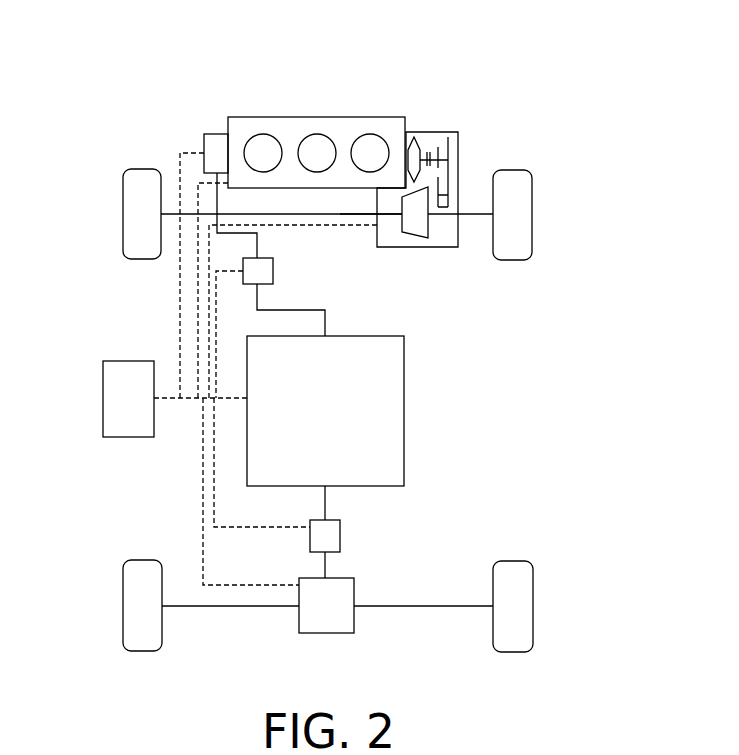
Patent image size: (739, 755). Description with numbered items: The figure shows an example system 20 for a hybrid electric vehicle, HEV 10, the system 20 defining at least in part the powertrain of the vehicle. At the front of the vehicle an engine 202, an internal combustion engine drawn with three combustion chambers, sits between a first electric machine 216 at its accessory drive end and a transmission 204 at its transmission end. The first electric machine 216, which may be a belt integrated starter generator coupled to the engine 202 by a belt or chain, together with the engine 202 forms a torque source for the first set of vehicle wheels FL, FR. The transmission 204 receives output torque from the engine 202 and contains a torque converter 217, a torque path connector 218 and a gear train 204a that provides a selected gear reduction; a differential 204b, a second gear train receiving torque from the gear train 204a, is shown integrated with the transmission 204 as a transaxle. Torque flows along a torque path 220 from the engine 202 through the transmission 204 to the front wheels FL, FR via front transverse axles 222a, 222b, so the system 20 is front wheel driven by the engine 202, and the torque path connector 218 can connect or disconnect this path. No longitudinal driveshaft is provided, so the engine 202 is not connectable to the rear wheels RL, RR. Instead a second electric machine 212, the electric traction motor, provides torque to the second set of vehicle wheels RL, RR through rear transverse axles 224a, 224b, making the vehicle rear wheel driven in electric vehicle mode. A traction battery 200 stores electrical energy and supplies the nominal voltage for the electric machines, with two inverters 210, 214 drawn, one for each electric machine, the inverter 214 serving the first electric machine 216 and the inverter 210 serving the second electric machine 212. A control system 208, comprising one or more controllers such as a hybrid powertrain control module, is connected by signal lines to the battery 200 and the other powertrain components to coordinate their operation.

The HEV 10 is at (548, 68).
The system 20 is at (530, 131).
The traction battery 200 is at (404, 415).
The engine 202 is at (313, 117).
The transmission 204 is at (460, 132).
The gear train 204a is at (449, 150).
The differential 204b is at (412, 238).
The control system 208 is at (103, 398).
The inverter 210 is at (340, 536).
The second electric machine 212 is at (322, 634).
The inverter 214 is at (273, 270).
The first electric machine 216 is at (217, 133).
The torque converter 217 is at (415, 137).
The torque path connector 218 is at (438, 147).
The torque path 220 is at (352, 218).
The first axle 222a is at (174, 210).
The first axle 222b is at (472, 217).
The rear transverse axle 224a is at (192, 608).
The rear transverse axle 224b is at (431, 606).
The front left vehicle wheel FL is at (123, 216).
The front right vehicle wheel FR is at (532, 216).
The rear left vehicle wheel RL is at (123, 607).
The rear right vehicle wheel RR is at (533, 607).